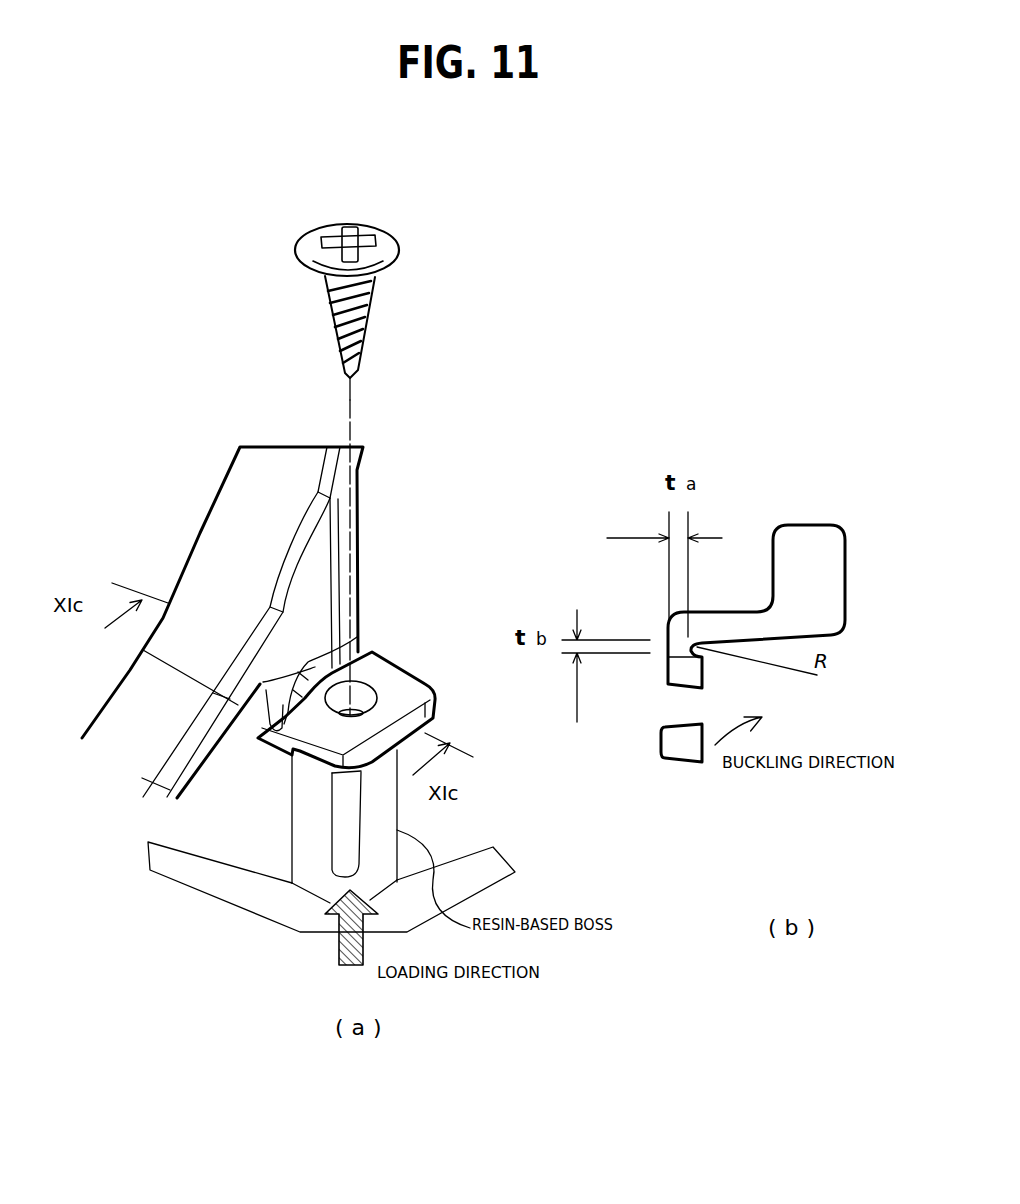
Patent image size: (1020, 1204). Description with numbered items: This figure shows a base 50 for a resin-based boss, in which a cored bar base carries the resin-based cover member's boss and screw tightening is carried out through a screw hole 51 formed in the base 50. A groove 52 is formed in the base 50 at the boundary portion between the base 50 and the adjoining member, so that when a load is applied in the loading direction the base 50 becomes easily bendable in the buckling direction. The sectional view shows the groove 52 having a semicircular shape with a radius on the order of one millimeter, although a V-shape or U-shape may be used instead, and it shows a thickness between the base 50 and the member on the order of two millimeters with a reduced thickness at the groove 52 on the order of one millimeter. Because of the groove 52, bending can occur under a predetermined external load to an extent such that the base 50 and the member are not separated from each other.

The base 50 is at (418, 682).
The screw hole 51 is at (367, 692).
The groove 52 is at (354, 682).